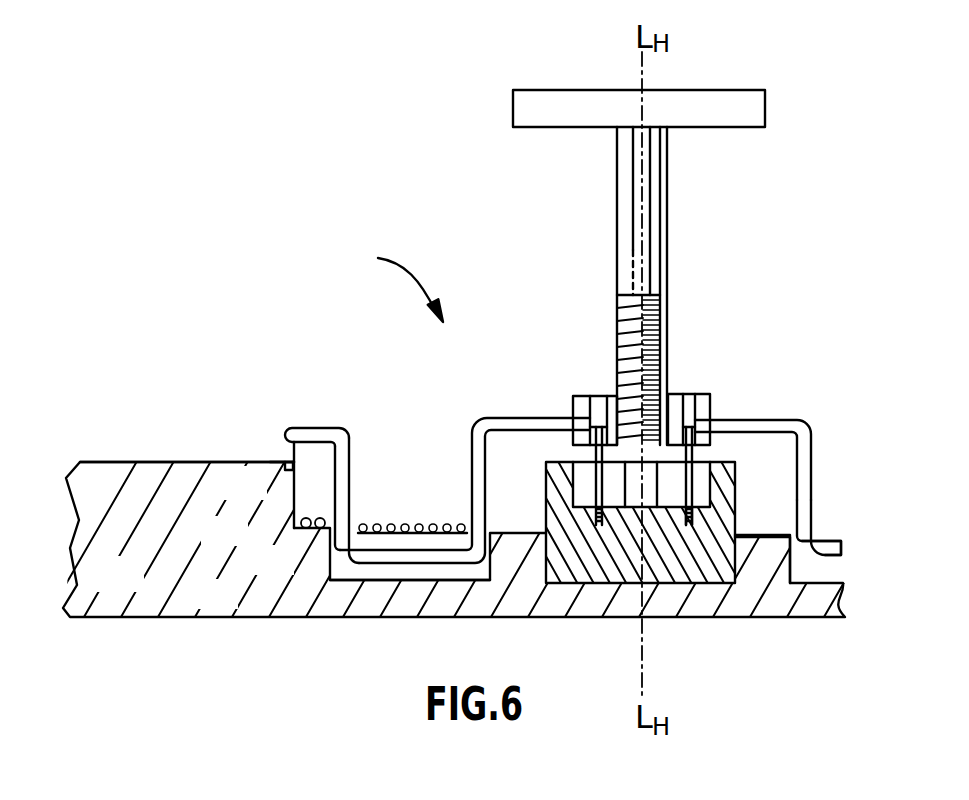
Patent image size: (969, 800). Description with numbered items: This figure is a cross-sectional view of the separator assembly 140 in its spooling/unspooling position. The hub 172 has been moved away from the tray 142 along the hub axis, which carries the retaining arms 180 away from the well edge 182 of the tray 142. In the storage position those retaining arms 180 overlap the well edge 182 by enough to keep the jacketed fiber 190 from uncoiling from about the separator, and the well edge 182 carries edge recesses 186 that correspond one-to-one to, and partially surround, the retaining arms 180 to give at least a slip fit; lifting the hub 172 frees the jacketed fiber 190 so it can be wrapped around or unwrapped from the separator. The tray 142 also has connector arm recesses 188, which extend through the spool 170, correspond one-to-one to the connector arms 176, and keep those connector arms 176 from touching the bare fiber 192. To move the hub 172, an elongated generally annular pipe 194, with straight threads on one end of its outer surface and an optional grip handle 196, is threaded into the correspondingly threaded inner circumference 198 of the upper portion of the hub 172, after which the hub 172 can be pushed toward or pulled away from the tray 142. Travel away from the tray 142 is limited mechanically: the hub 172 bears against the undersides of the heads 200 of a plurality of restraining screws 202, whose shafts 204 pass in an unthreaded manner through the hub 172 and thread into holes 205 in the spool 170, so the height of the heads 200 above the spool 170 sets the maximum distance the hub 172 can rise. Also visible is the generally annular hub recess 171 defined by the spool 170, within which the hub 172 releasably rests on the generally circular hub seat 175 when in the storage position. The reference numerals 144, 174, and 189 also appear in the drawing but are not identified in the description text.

The separator assembly 140 is at (372, 271).
The tray 142 is at (140, 588).
The raised portion of base 144 is at (262, 497).
The spool 170 is at (640, 525).
The hub recess 171 is at (740, 540).
The hub 172 is at (700, 397).
The flange of bracket 174 is at (348, 468).
The hub seat 175 is at (617, 517).
The connector arms 176 is at (405, 565).
The retaining arms 180 is at (310, 428).
The well edge 182 is at (292, 462).
The edge recesses 186 is at (288, 480).
The connector arm recesses 188 is at (340, 573).
The junction 189 is at (285, 462).
The jacketed fiber 190 is at (304, 534).
The bare fiber 192 is at (335, 556).
The elongated generally annular pipe 194 is at (667, 235).
The grip handle 196 is at (718, 90).
The threaded inner circumference 198 is at (672, 398).
The heads 200 is at (700, 413).
The restraining screws 202 is at (690, 456).
The shafts 204 is at (836, 510).
The holes 205 is at (692, 522).